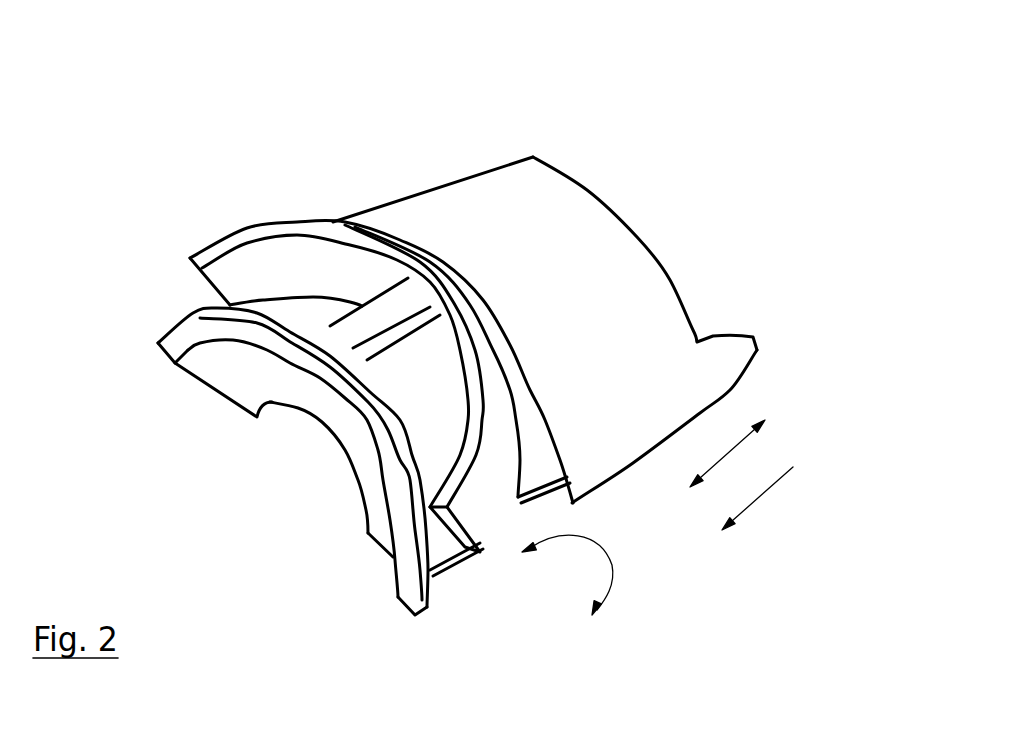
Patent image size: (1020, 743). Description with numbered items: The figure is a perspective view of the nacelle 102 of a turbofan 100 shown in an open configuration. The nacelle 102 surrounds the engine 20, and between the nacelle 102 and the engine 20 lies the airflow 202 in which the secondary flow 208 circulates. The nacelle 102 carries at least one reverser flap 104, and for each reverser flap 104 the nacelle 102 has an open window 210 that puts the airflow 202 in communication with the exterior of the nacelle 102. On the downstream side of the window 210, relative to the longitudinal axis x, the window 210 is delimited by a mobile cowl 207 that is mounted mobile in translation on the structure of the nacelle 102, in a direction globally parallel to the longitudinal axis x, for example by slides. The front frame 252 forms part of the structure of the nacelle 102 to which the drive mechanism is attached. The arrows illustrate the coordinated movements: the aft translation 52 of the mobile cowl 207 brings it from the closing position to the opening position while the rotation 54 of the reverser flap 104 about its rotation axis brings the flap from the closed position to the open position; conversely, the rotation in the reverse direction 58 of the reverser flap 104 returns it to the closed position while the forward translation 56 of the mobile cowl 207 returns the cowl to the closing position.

The turbofan 100 is at (655, 128).
The nacelle 102 is at (244, 168).
The reverser flap 104 is at (228, 272).
The engine 20 is at (380, 317).
The mobile cowl 207 is at (603, 312).
The window 210 is at (297, 285).
The front frame 252 is at (252, 335).
The secondary flow 208 is at (437, 376).
The airflow 202 is at (437, 432).
The aft translation arrow 52 is at (750, 440).
The forward translation arrow 56 is at (719, 507).
The reverse rotation arrow 58 is at (560, 572).
The rotation arrow 54 is at (591, 631).